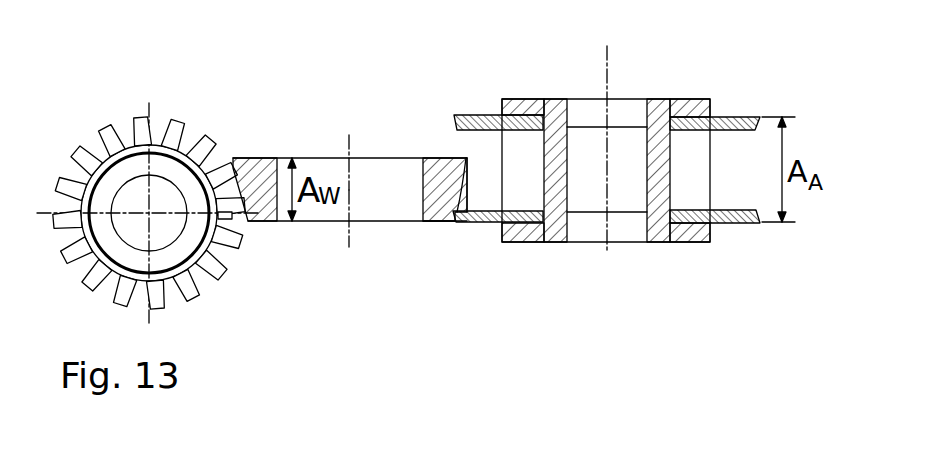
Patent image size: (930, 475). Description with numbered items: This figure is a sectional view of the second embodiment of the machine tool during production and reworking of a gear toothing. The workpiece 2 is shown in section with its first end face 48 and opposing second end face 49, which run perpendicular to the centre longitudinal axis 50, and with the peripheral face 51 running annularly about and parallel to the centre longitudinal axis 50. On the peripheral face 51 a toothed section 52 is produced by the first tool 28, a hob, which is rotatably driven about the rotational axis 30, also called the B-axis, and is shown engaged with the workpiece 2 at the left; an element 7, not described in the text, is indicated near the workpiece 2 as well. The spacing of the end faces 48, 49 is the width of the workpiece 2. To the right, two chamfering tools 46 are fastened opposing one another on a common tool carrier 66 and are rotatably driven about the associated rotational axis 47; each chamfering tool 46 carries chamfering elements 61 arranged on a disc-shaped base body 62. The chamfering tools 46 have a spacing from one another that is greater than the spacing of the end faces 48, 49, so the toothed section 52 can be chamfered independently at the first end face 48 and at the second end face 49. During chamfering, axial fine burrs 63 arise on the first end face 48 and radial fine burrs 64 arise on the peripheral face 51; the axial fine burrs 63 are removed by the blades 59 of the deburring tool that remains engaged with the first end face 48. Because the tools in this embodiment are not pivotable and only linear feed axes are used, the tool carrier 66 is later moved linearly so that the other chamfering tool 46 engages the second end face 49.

The workpiece 2 is at (393, 150).
The axis 7 is at (349, 137).
The first tool 28 is at (176, 130).
The rotational axis 30 is at (143, 208).
The third tool 46 is at (557, 92).
The rotational axis 47 is at (607, 132).
The first end face 48 is at (441, 222).
The second end face 49 is at (441, 157).
The centre longitudinal axis 50 is at (350, 233).
The peripheral face 51 is at (468, 190).
The toothed section 52 is at (535, 223).
The blades 59 is at (471, 114).
The chamfering elements 61 is at (748, 116).
The base body 62 is at (663, 240).
The axial fine burrs 63 is at (247, 226).
The radial fine burrs 64 is at (231, 219).
The tool carrier 66 is at (657, 138).